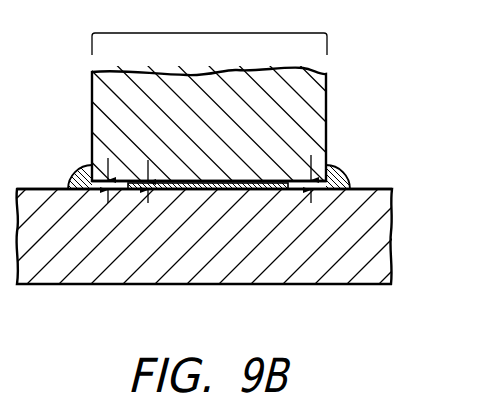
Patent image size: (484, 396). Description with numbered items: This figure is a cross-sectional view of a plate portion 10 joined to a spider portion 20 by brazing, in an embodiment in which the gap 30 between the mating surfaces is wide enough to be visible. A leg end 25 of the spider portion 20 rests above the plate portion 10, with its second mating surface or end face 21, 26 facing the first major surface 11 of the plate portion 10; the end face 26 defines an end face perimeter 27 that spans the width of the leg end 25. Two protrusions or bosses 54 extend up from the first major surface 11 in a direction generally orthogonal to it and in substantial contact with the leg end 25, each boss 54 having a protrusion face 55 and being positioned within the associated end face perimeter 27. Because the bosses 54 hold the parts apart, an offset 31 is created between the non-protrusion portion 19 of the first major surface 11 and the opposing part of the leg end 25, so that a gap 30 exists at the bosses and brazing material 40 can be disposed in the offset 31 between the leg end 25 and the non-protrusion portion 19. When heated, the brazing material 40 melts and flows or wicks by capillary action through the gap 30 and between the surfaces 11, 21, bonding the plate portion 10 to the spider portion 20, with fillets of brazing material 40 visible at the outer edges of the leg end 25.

The plate portion 10 is at (377, 233).
The first major surface 11 is at (238, 164).
The non-protrusion portion 19 is at (372, 188).
The spider portion 20 is at (217, 130).
The leg end 25 is at (312, 118).
The second mating surface 21 is at (213, 256).
The end face 26 is at (228, 188).
The end face perimeter 27 is at (210, 33).
The gap 30 is at (111, 165).
The offset 31 is at (150, 202).
The brazing material 40 is at (79, 173).
The protrusion 54 is at (78, 308).
The protrusion face 55 is at (112, 181).